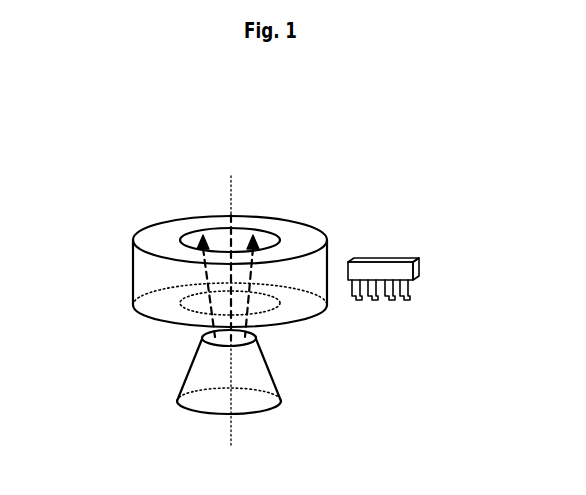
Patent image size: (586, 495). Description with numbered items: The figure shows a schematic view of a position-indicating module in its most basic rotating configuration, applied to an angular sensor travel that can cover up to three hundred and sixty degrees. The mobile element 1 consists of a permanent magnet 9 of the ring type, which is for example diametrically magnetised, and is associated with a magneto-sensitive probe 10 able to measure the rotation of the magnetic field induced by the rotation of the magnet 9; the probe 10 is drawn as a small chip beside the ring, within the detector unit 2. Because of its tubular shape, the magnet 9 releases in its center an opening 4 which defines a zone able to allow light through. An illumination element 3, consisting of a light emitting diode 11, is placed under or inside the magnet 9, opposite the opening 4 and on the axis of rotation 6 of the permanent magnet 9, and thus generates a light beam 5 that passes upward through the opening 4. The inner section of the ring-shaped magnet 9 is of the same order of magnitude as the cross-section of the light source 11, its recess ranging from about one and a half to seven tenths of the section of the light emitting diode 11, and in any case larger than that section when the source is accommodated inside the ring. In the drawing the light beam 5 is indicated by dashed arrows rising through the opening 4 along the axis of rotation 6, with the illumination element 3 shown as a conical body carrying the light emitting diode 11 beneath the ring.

The mobile element 1 is at (202, 221).
The light detector unit 2 is at (411, 226).
The illumination element 3 is at (231, 374).
The opening 4 is at (264, 231).
The light beam 5 is at (226, 205).
The axis of rotation 6 is at (236, 179).
The permanent magnet 9 is at (142, 272).
The magneto-sensitive probe 10 is at (373, 258).
The light emitting diode 11 is at (186, 392).